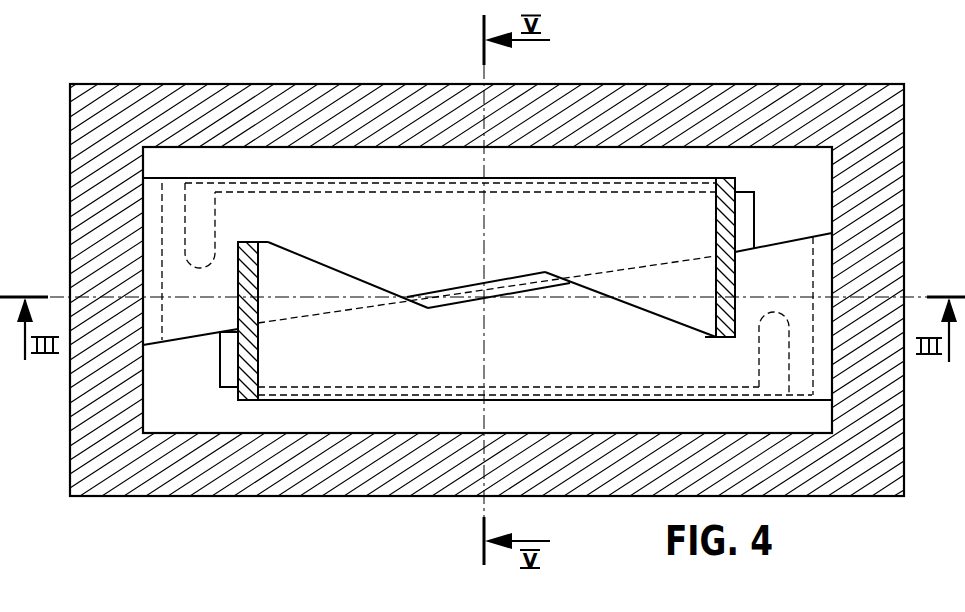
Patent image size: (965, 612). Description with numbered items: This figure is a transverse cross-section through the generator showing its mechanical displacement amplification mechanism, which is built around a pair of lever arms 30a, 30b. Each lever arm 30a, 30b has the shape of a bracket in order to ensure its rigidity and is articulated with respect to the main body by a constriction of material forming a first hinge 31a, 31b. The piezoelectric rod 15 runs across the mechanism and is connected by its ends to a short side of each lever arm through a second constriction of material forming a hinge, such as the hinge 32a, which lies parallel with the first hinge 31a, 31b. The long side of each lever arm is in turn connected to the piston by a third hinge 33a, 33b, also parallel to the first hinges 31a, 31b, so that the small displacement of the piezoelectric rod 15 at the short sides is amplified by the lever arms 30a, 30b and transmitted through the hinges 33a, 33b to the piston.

The piezoelectric rod 15 is at (743, 238).
The lever arm 30a is at (350, 228).
The lever arm 30b is at (385, 367).
The hinge 31a is at (152, 197).
The hinge 31b is at (823, 400).
The hinge 32a is at (200, 300).
The hinge 33a is at (727, 207).
The hinge 33b is at (246, 374).